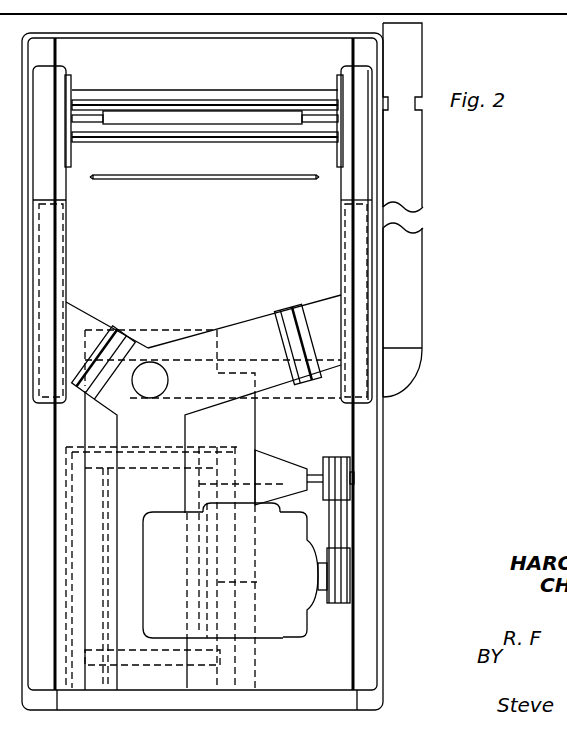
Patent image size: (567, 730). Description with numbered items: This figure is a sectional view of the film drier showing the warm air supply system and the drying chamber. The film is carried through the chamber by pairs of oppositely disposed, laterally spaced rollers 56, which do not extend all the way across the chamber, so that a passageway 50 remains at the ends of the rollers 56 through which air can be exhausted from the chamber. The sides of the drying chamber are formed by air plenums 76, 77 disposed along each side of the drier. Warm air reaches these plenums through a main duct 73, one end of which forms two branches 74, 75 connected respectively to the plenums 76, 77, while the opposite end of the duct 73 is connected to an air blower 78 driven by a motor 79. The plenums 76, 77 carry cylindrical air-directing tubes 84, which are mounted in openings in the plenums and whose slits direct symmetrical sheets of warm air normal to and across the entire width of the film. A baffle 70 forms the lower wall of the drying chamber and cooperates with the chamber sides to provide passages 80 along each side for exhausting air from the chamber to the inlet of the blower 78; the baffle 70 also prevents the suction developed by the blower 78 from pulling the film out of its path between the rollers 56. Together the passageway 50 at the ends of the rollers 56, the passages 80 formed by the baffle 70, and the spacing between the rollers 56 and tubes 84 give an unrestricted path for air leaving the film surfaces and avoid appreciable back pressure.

The passageway 50 is at (94, 118).
The rollers 56 is at (214, 110).
The air-directing tubes 84 is at (158, 96).
The baffle 70 is at (197, 180).
The passages 80 is at (87, 177).
The air plenum 76 is at (67, 200).
The air plenum 77 is at (338, 190).
The branch 74 is at (82, 318).
The branch 75 is at (251, 328).
The main duct 73 is at (164, 433).
The air blower 78 is at (250, 436).
The motor 79 is at (298, 631).